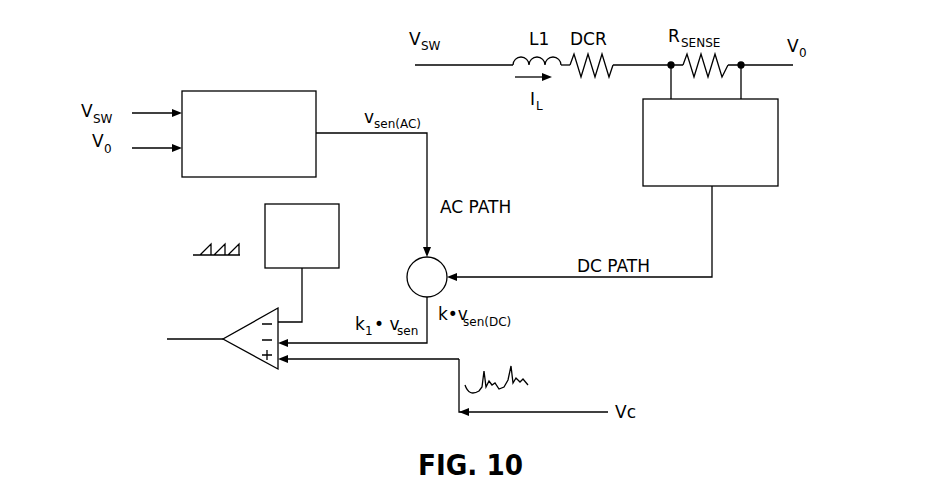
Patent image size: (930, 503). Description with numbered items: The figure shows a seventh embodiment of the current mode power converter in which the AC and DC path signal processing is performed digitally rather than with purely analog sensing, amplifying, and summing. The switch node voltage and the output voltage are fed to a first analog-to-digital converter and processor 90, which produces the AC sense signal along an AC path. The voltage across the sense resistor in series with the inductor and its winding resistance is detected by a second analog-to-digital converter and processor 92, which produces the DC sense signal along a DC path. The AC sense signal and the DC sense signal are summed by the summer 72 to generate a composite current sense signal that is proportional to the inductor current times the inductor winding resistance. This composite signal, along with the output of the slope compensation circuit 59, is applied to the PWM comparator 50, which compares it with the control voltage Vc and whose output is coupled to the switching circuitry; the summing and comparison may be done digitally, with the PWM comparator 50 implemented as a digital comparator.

The analog-to-digital converter 90 is at (272, 91).
The analog-to-digital converter 92 is at (778, 123).
The summer 72 is at (407, 280).
The slope compensation circuit 59 is at (265, 226).
The PWM comparator 50 is at (256, 357).